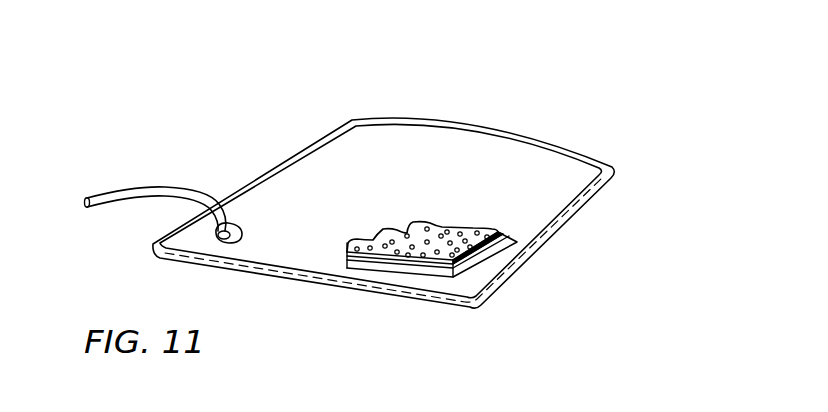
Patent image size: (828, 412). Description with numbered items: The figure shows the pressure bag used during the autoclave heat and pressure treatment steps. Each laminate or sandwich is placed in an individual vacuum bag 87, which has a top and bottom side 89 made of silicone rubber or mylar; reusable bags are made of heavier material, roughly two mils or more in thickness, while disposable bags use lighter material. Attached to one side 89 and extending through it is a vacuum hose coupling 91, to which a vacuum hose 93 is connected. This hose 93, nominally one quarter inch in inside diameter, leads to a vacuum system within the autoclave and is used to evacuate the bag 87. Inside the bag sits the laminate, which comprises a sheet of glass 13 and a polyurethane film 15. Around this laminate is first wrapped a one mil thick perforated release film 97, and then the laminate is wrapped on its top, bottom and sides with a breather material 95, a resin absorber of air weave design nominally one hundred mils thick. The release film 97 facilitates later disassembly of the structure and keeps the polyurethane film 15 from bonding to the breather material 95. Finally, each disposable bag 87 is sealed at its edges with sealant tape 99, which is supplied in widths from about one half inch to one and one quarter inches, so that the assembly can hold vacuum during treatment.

The vacuum bag 87 is at (376, 206).
The top and bottom side 89 is at (432, 142).
The sealant tape 99 is at (557, 148).
The vacuum hose 93 is at (158, 187).
The vacuum hose coupling 91 is at (239, 224).
The breather material 95 is at (438, 242).
The polyurethane film 15 is at (488, 245).
The sheet of glass 13 is at (470, 264).
The perforated release film 97 is at (413, 265).